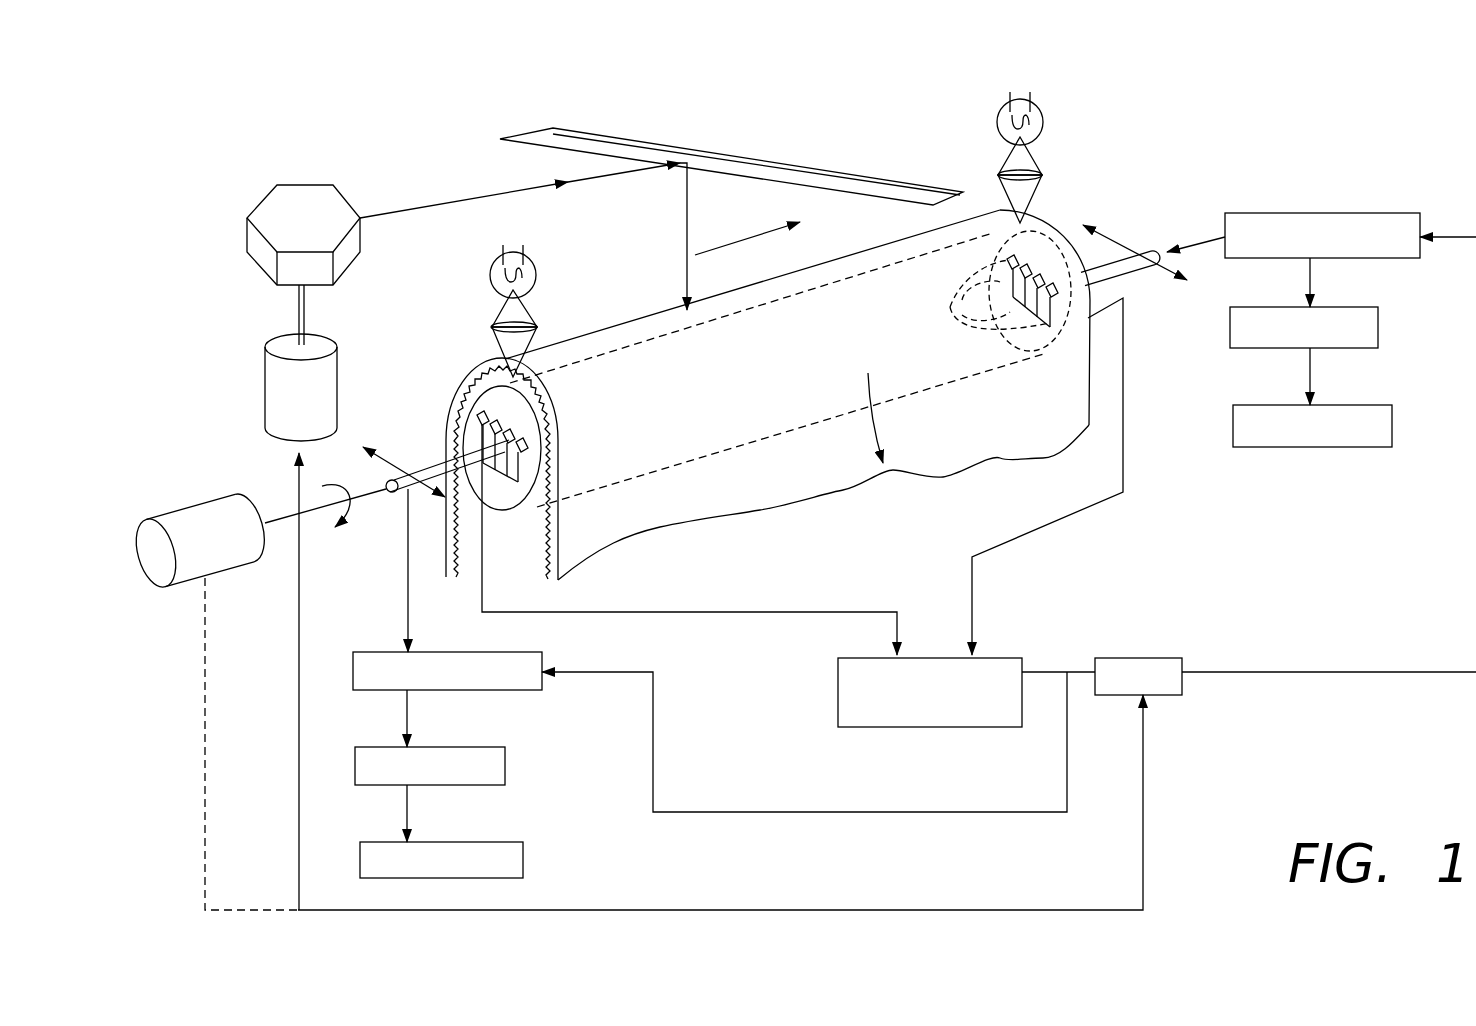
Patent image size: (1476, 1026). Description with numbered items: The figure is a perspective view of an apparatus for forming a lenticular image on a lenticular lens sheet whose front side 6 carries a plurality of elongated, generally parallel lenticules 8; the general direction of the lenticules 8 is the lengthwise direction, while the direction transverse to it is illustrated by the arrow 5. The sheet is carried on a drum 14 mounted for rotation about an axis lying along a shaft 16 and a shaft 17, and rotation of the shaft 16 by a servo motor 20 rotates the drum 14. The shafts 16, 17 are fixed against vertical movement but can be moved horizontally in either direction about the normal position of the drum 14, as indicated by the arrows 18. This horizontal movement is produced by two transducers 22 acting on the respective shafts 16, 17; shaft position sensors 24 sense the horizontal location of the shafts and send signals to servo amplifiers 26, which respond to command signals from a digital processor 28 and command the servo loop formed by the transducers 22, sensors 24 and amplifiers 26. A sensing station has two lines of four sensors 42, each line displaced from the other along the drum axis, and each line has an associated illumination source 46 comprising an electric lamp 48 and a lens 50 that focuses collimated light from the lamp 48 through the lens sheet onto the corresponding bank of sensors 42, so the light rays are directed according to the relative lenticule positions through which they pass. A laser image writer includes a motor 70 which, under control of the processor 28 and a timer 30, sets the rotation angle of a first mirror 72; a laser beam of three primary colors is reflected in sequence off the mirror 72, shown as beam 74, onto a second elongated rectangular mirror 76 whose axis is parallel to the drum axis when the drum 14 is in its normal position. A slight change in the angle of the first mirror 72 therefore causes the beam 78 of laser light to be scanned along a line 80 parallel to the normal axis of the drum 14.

The arrow indicating transverse direction 5 is at (880, 420).
The front side 6 is at (458, 505).
The lenticules 8 is at (492, 492).
The drum 14 is at (540, 477).
The shaft 16 is at (437, 470).
The shaft 17 is at (1130, 267).
The arrows 18 is at (412, 488).
The servo motor 20 is at (187, 520).
The transducers 22 is at (388, 650).
The shaft position sensors 24 is at (377, 745).
The servo amplifiers 26 is at (378, 842).
The digital processor 28 is at (920, 727).
The timer 30 is at (1125, 658).
The sensors 42 is at (520, 384).
The illumination source 46 is at (759, 217).
The electric lamp 48 is at (528, 247).
The lens 50 is at (535, 310).
The motor 70 is at (272, 385).
The first mirror 72 is at (310, 197).
The beam 74 is at (450, 203).
The second elongated rectangular mirror 76 is at (770, 162).
The beam 78 is at (687, 217).
The line 80 is at (727, 247).